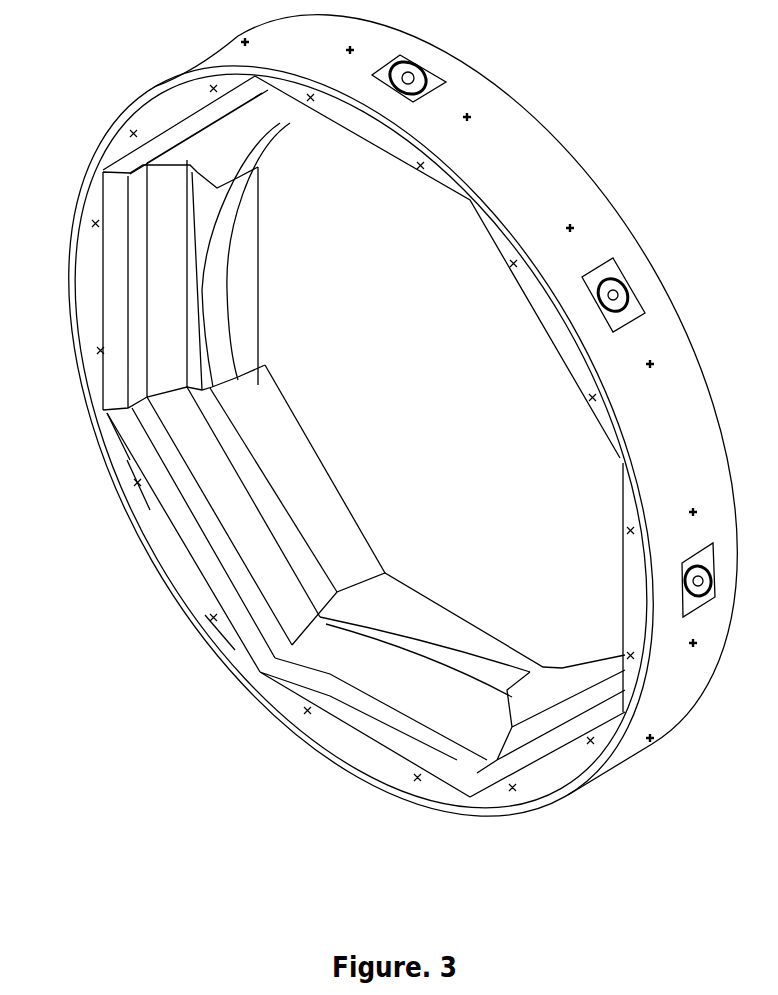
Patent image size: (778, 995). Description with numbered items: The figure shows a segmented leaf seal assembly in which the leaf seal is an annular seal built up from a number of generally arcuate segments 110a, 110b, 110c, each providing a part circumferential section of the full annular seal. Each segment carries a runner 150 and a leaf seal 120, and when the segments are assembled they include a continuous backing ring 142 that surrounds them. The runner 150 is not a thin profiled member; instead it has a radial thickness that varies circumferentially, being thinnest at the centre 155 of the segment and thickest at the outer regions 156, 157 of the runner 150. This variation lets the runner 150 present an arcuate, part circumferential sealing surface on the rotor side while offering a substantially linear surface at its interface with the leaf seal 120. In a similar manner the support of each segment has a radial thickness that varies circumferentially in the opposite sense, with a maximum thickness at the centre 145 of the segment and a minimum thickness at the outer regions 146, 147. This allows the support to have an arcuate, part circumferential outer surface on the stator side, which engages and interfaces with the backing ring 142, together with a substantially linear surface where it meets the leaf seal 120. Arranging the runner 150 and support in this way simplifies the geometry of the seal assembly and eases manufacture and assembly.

The segment 110a is at (100, 210).
The segment 110b is at (163, 548).
The segment 110c is at (343, 733).
The leaf seal 120 is at (163, 267).
The backing ring 142 is at (547, 167).
The centre of the segment (support) 145 is at (140, 487).
The outer region (support) 146 is at (130, 460).
The outer region (support) 147 is at (220, 627).
The runner 150 is at (223, 323).
The centre of the segment (runner) 155 is at (270, 455).
The outer region of the runner 156 is at (253, 413).
The outer region of the runner 157 is at (320, 543).